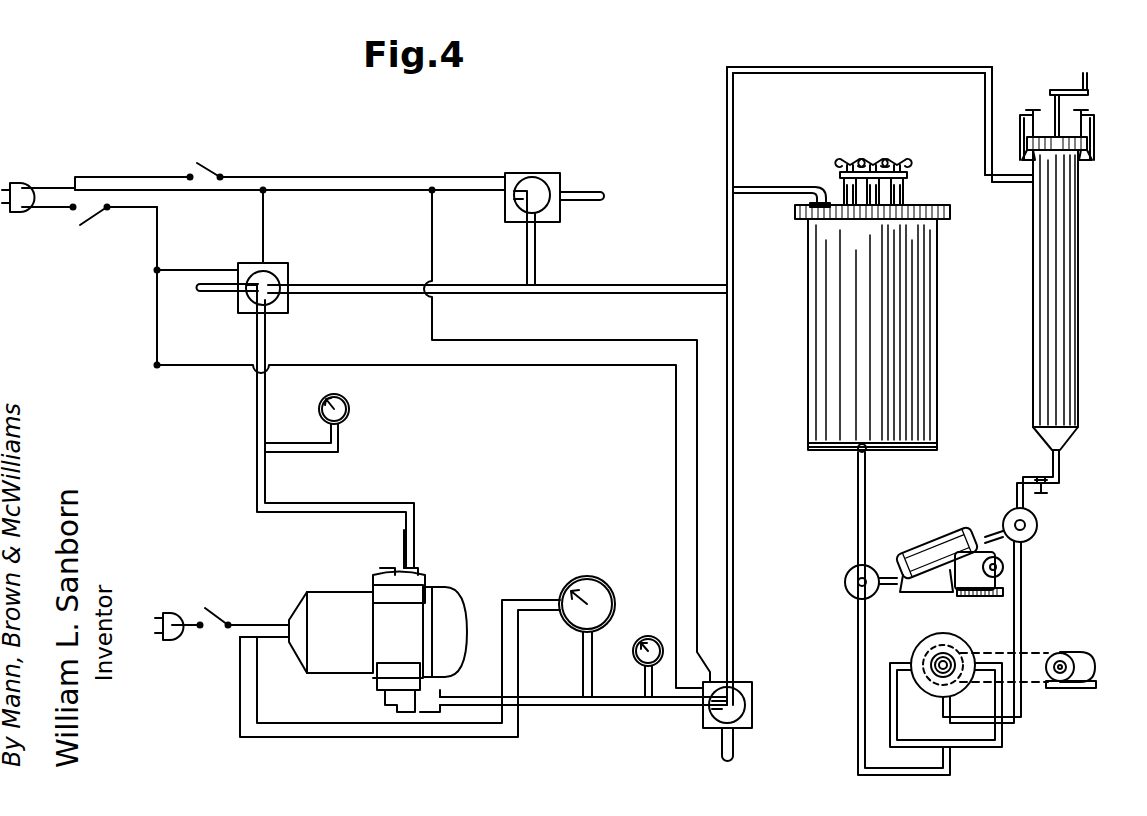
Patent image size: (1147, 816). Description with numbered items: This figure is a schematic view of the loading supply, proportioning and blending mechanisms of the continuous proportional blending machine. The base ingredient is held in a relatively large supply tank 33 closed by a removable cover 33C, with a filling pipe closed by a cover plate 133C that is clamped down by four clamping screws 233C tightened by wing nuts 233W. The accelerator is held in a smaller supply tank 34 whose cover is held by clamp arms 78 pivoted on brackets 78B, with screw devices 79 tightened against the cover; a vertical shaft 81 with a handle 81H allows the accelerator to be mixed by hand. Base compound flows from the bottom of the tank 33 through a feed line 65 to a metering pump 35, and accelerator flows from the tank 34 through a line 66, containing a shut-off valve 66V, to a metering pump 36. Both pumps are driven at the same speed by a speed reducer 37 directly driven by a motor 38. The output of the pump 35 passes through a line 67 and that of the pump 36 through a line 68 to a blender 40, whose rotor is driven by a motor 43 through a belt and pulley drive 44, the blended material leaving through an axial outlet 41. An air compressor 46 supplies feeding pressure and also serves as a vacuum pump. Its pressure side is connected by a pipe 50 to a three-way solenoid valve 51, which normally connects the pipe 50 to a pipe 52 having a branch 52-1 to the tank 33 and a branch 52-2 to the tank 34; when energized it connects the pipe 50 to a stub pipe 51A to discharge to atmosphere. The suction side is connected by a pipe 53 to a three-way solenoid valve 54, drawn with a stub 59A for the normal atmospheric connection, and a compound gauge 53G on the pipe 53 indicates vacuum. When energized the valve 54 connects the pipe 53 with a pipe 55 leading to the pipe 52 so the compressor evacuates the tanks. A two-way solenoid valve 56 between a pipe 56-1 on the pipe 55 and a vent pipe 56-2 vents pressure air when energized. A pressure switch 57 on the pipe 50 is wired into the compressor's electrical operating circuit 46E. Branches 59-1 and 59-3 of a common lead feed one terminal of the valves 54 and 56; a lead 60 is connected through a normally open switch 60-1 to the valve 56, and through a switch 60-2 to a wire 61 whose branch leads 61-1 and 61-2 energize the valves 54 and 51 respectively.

The lead 60 is at (30, 213).
The normally open switch 60-1 is at (212, 164).
The switch 60-2 is at (90, 222).
The wire 61 is at (158, 230).
The branch lead 61-1 is at (183, 268).
The branch lead 61-2 is at (185, 368).
The branch 59-1 is at (266, 221).
The branch 59-3 is at (455, 195).
The vent outlet 59A is at (207, 291).
The solenoid operated 3-way valve 54 is at (289, 313).
The pipe 55 is at (343, 284).
The 2-way solenoid operated valve 56 is at (515, 172).
The pipe 56-1 is at (534, 272).
The vent pipe 56-2 is at (587, 190).
The pipe 52 is at (730, 412).
The branch 52-1 is at (753, 186).
The branch 52-2 is at (727, 96).
The pipe 53 is at (256, 465).
The compound gauge 53G is at (350, 411).
The air compressor 46 is at (325, 615).
The electrical operating circuit 46E is at (330, 724).
The pressure switch 57 is at (585, 576).
The pipe 50 is at (600, 706).
The three-way solenoid operated valve 51 is at (700, 727).
The stub pipe 51A is at (735, 746).
The supply tank 33 is at (826, 309).
The cover 33C is at (913, 206).
The cover plate 133C is at (887, 176).
The wing nuts 233W is at (903, 172).
The clamping screws 233C is at (903, 187).
The supply tank 34 is at (1039, 356).
The clamp arms 78 is at (1092, 143).
The brackets 78B is at (1082, 164).
The screw devices 79 is at (1027, 116).
The vertical shaft 81 is at (1057, 107).
The handle 81H is at (1073, 88).
The feed line 65 is at (857, 490).
The line 66 is at (1050, 463).
The shut-off valve 66V is at (1043, 490).
The metering pump 35 is at (848, 590).
The metering pump 36 is at (1037, 533).
The speed reducer 37 is at (923, 545).
The motor 38 is at (977, 548).
The line 67 is at (858, 665).
The line 68 is at (1023, 604).
The blender 40 is at (928, 648).
The axial outlet 41 is at (938, 677).
The speed reducing belt and pulley drive 44 is at (1033, 655).
The motor 43 is at (1075, 651).